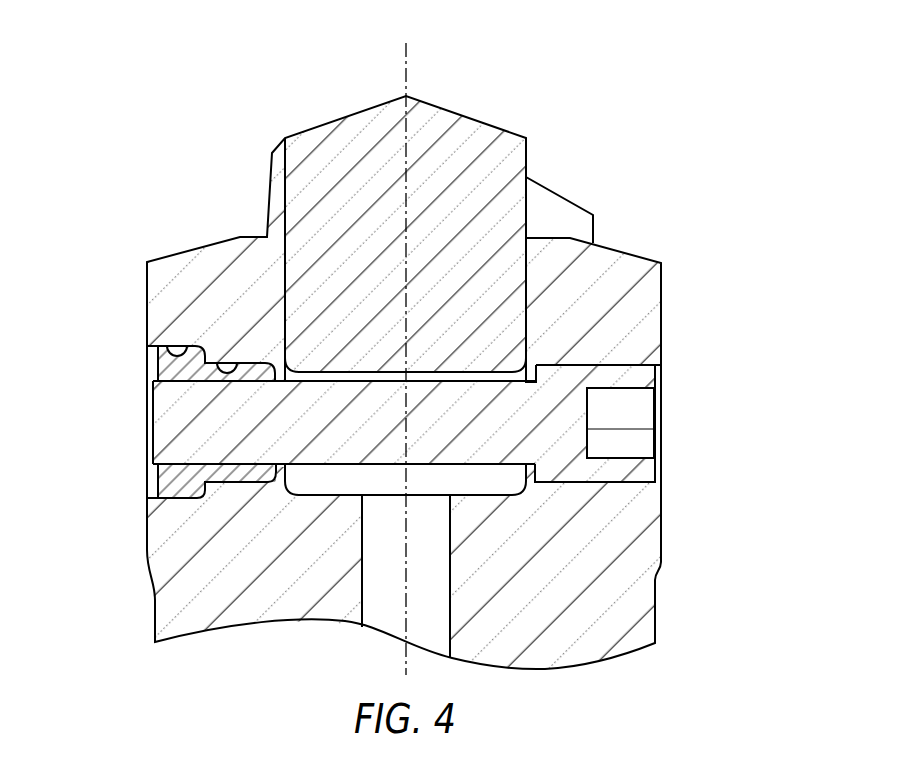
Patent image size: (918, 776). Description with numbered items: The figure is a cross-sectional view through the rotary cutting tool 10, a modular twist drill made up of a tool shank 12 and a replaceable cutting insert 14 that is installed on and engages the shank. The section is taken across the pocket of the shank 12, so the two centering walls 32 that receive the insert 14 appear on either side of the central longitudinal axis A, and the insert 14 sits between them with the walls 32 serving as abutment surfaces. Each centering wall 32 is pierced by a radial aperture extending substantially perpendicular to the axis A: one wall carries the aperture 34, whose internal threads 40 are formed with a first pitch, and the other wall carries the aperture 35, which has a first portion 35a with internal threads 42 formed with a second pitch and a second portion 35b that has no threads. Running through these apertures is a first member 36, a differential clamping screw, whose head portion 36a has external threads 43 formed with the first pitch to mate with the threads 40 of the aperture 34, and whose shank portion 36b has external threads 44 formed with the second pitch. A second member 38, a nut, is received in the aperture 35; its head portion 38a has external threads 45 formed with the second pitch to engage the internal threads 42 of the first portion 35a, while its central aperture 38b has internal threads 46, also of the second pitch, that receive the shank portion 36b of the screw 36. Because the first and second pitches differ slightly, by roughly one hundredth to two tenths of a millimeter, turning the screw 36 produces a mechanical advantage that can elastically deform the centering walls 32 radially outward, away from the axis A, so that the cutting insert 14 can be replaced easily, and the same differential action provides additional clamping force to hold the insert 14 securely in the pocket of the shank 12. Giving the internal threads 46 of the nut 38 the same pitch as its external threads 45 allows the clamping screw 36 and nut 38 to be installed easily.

The rotary cutting tool 10 is at (108, 124).
The central longitudinal axis A is at (408, 63).
The tool shank 12 is at (668, 607).
The replaceable cutting insert 14 is at (575, 177).
The centering walls 32 is at (288, 274).
The aperture 34 is at (668, 375).
The aperture 35 is at (142, 409).
The first portion 35a is at (186, 348).
The second portion 35b is at (237, 372).
The first member 36 is at (662, 443).
The head portion 36a is at (630, 458).
The shank portion 36b is at (330, 425).
The second member 38 is at (146, 483).
The head portion 38a is at (182, 482).
The central aperture 38b is at (240, 468).
The internal threads 40 is at (640, 357).
The internal threads 42 is at (142, 345).
The external threads 43 is at (619, 357).
The external threads 44 is at (142, 381).
The external threads 45 is at (168, 342).
The internal threads 46 is at (142, 463).